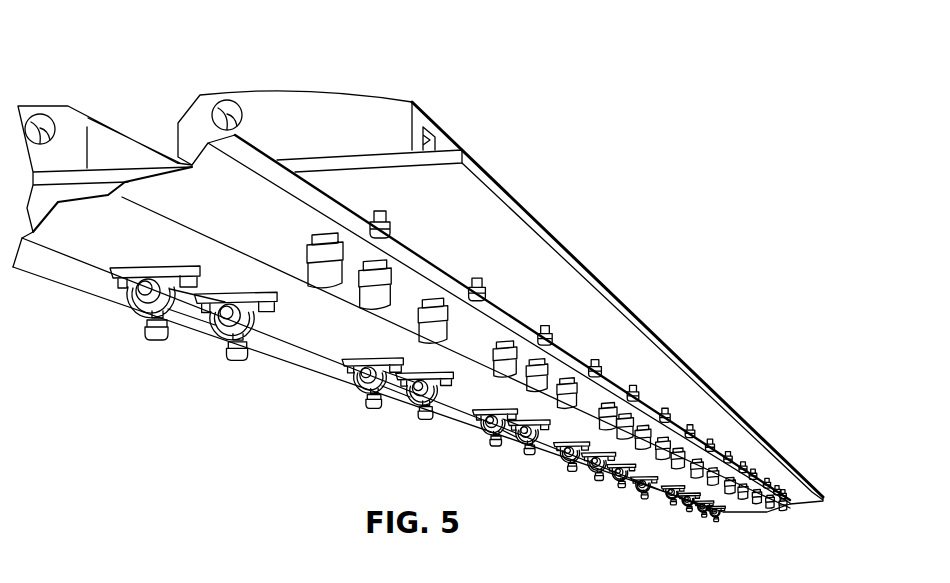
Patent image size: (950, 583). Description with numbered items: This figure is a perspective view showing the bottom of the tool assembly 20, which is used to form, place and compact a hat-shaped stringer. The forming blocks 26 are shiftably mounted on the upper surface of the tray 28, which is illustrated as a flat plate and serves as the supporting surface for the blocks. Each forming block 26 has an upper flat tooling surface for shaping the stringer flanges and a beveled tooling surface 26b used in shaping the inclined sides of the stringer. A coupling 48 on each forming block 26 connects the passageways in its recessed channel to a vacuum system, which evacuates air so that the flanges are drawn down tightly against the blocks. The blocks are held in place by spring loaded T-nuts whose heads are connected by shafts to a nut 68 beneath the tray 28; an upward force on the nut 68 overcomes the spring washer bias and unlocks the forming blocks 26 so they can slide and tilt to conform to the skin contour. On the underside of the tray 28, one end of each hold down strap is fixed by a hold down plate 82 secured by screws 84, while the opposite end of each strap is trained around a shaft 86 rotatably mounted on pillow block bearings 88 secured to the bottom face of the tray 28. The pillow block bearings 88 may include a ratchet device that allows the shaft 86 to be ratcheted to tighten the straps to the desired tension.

The tool assembly 20 is at (535, 85).
The forming block 26 is at (314, 118).
The beveled tooling surface 26b is at (90, 112).
The tray 28 is at (598, 278).
The coupling 48 is at (30, 117).
The nut 68 is at (381, 211).
The hold down plate 82 is at (407, 277).
The screws 84 is at (133, 305).
The shaft 86 is at (206, 312).
The pillow block bearings 88 is at (437, 330).